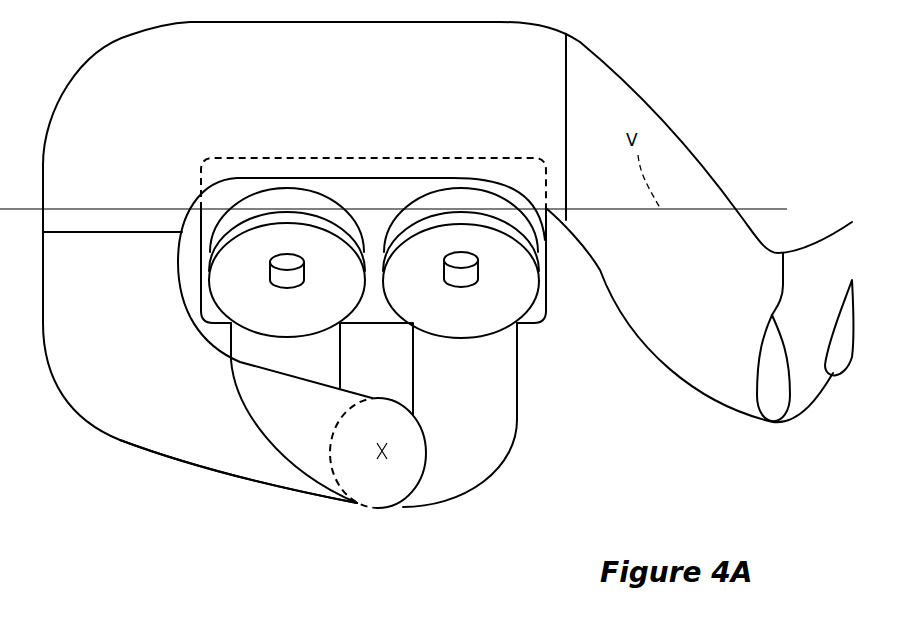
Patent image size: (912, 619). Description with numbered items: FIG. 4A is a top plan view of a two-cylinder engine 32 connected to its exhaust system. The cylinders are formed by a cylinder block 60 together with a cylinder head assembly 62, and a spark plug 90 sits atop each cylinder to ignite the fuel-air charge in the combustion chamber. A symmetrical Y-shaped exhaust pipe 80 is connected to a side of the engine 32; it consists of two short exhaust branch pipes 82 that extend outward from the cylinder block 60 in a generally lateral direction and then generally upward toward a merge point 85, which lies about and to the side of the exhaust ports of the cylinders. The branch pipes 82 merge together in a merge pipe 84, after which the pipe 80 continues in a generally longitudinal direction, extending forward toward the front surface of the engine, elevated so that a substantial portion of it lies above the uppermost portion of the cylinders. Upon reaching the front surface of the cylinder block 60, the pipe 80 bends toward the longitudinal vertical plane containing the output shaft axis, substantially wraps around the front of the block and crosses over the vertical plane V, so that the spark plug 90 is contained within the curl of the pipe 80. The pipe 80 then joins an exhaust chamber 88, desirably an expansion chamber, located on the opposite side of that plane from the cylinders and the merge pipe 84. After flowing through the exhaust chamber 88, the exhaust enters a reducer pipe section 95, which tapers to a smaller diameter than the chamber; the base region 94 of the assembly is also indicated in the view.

The engine 32 is at (543, 405).
The cylinder block 60 is at (303, 200).
The cylinder head assembly 62 is at (230, 283).
The exhaust pipe 80 is at (363, 486).
The exhaust branch pipes 82 is at (323, 358).
The merge pipe 84 is at (397, 482).
The merge point 85 is at (390, 450).
The exhaust chamber 88 is at (130, 80).
The spark plug 90 is at (459, 283).
The base 94 is at (237, 455).
The reducer pipe section 95 is at (807, 372).